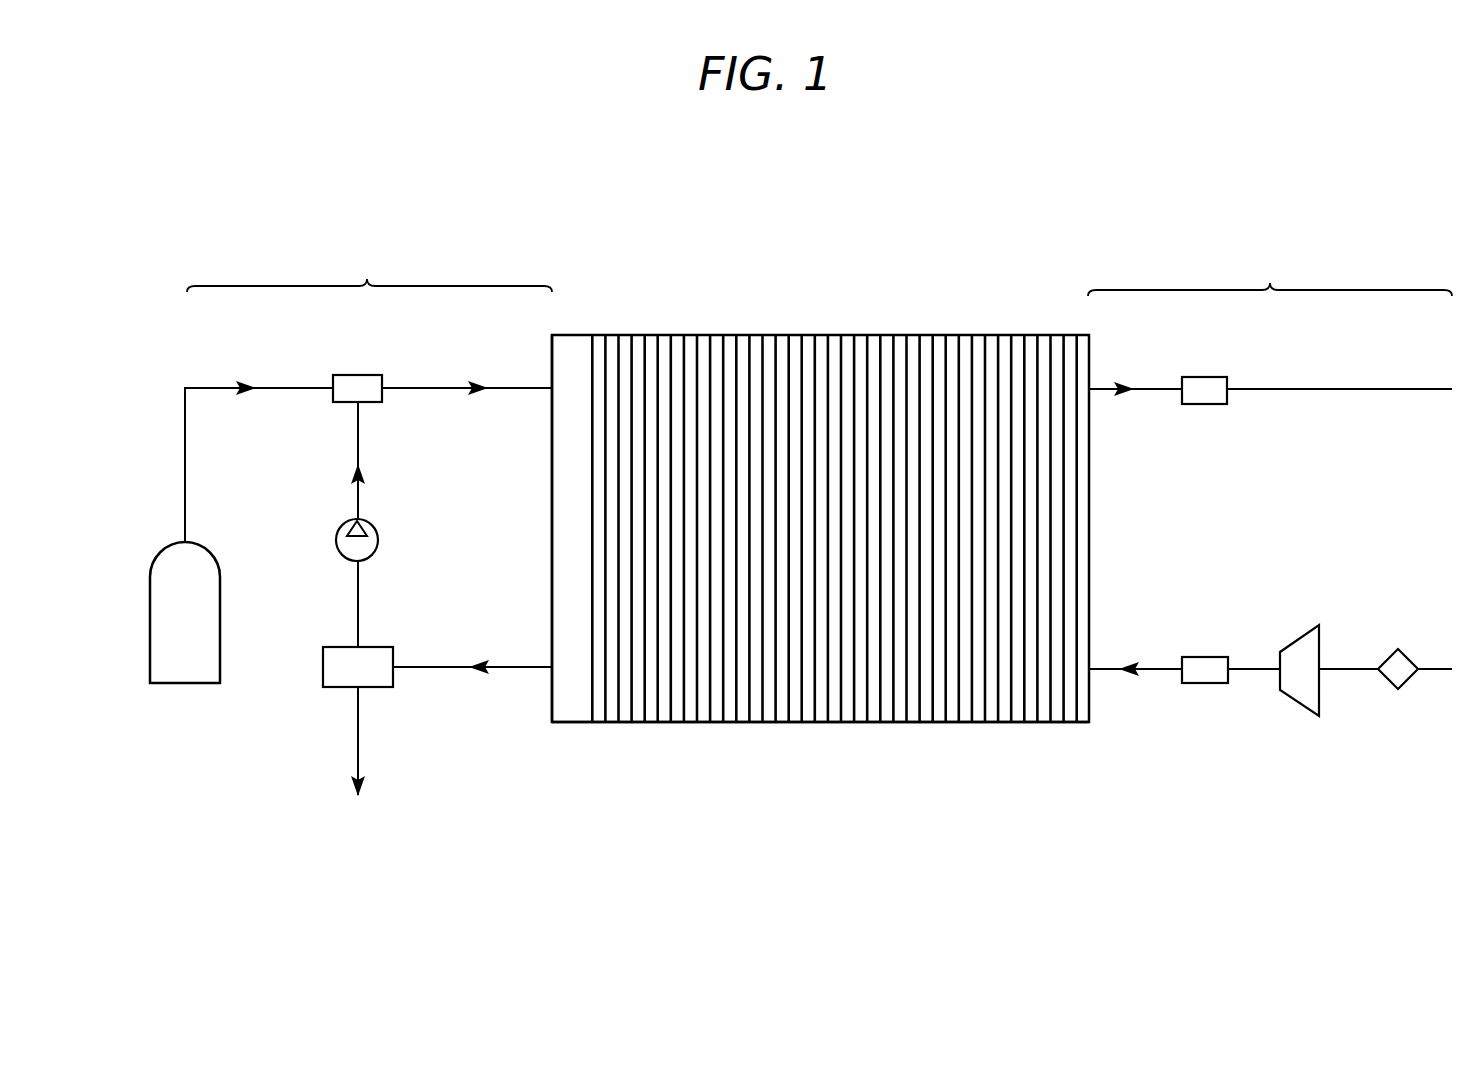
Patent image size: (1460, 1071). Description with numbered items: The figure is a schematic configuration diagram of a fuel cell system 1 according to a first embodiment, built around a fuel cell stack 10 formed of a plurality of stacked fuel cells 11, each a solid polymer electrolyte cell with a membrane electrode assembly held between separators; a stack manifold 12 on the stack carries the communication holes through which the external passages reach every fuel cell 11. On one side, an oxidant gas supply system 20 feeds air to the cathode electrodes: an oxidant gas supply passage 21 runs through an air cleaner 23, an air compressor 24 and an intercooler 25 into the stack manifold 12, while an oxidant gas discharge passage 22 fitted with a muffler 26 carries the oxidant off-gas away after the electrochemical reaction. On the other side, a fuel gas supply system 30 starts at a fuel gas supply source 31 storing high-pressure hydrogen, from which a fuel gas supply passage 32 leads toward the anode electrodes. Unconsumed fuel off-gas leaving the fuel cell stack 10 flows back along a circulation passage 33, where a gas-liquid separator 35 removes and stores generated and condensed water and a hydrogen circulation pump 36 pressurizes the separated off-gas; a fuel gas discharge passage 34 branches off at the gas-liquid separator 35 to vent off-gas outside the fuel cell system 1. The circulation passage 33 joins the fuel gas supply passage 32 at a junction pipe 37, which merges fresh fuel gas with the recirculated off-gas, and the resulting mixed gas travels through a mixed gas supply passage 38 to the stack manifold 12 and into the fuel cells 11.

The fuel cell system 1 is at (1114, 227).
The fuel cell stack 10 is at (835, 335).
The fuel cell 11 is at (834, 712).
The stack manifold 12 is at (573, 345).
The oxidant gas supply system 20 is at (1270, 274).
The oxidant gas supply passage 21 is at (1350, 668).
The oxidant gas discharge passage 22 is at (1157, 388).
The air cleaner 23 is at (1395, 690).
The air compressor 24 is at (1300, 703).
The intercooler 25 is at (1205, 684).
The muffler 26 is at (1210, 377).
The fuel gas supply system 30 is at (369, 270).
The fuel gas supply source 31 is at (150, 628).
The fuel gas supply passage 32 is at (275, 387).
The circulation passage 33 is at (358, 607).
The fuel gas discharge passage 34 is at (358, 740).
The gas-liquid separator 35 is at (323, 667).
The hydrogen circulation pump 36 is at (379, 541).
The junction pipe 37 is at (362, 375).
The mixed gas supply passage 38 is at (443, 387).